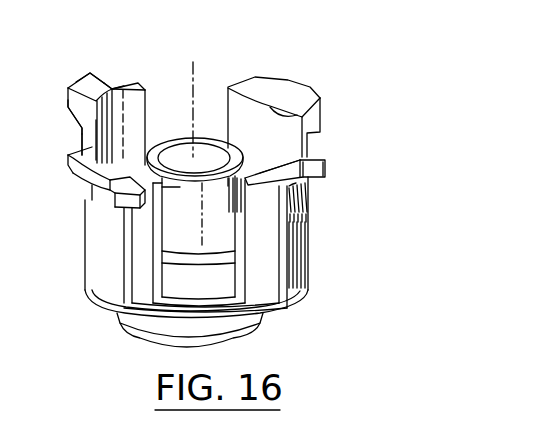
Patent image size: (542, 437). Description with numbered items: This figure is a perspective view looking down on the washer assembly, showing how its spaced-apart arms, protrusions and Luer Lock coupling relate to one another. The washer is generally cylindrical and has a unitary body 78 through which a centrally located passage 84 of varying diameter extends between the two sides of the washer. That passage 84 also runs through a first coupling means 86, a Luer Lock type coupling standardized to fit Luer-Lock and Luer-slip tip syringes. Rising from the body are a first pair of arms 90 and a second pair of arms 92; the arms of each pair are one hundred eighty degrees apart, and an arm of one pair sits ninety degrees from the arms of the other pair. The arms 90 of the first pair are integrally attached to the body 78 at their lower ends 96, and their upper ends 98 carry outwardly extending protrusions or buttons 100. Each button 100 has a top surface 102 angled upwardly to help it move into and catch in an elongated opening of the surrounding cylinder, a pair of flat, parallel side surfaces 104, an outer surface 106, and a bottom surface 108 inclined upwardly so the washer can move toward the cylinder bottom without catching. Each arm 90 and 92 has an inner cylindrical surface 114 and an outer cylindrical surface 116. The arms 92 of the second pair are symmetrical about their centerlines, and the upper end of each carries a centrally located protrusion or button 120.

The unitary body 78 is at (258, 322).
The centrally located passage 84 is at (213, 158).
The first coupling means 86 is at (168, 142).
The first pair of arms 90 is at (88, 137).
The second pair of arms 92 is at (233, 97).
The lower ends 96 is at (298, 288).
The upper ends 98 is at (122, 86).
The protrusions or buttons 100 is at (83, 83).
The top surface 102 is at (305, 157).
The side surfaces 104 is at (78, 108).
The outer surface 106 is at (317, 170).
The bottom surface 108 is at (313, 190).
The inner cylindrical surface 114 is at (140, 100).
The outer cylindrical surface 116 is at (297, 257).
The protrusion or button 120 is at (287, 82).